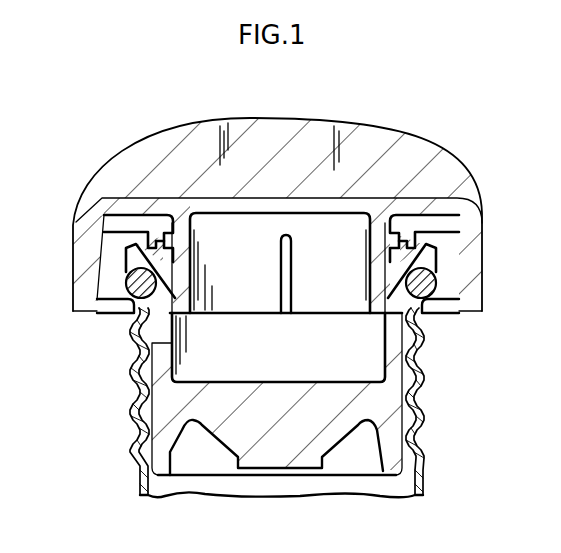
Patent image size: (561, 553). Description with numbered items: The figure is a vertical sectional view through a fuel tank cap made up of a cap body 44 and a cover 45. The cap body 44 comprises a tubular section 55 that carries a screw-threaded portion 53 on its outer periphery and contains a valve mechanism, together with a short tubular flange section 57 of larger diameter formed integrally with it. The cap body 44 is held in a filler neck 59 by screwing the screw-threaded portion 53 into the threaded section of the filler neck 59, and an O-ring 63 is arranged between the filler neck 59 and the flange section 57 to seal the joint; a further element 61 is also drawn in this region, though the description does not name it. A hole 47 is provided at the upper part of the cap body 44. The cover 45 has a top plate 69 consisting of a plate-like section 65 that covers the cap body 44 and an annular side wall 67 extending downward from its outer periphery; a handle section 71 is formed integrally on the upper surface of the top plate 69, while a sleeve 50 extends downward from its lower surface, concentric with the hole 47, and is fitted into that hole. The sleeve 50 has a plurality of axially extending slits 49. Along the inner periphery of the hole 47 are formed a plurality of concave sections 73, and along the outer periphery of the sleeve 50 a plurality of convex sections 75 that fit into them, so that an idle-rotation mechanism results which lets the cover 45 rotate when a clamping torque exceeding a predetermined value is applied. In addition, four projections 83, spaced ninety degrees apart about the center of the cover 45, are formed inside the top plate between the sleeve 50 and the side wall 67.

The cap body 44 is at (442, 270).
The cover 45 is at (259, 201).
The hole 47 is at (286, 302).
The slits 49 is at (284, 236).
The sleeve 50 is at (112, 401).
The screw-threaded portion 53 is at (426, 377).
The tubular section 55 is at (398, 423).
The flange section 57 is at (418, 260).
The filler neck 59 is at (130, 368).
The bellows fold 61 is at (132, 402).
The O-ring 63 is at (124, 284).
The plate-like section 65 is at (244, 200).
The annular side wall 67 is at (80, 228).
The top plate 69 is at (169, 194).
The handle section 71 is at (440, 160).
The concave sections 73 is at (437, 401).
The convex sections 75 is at (374, 283).
The projections 83 is at (128, 216).